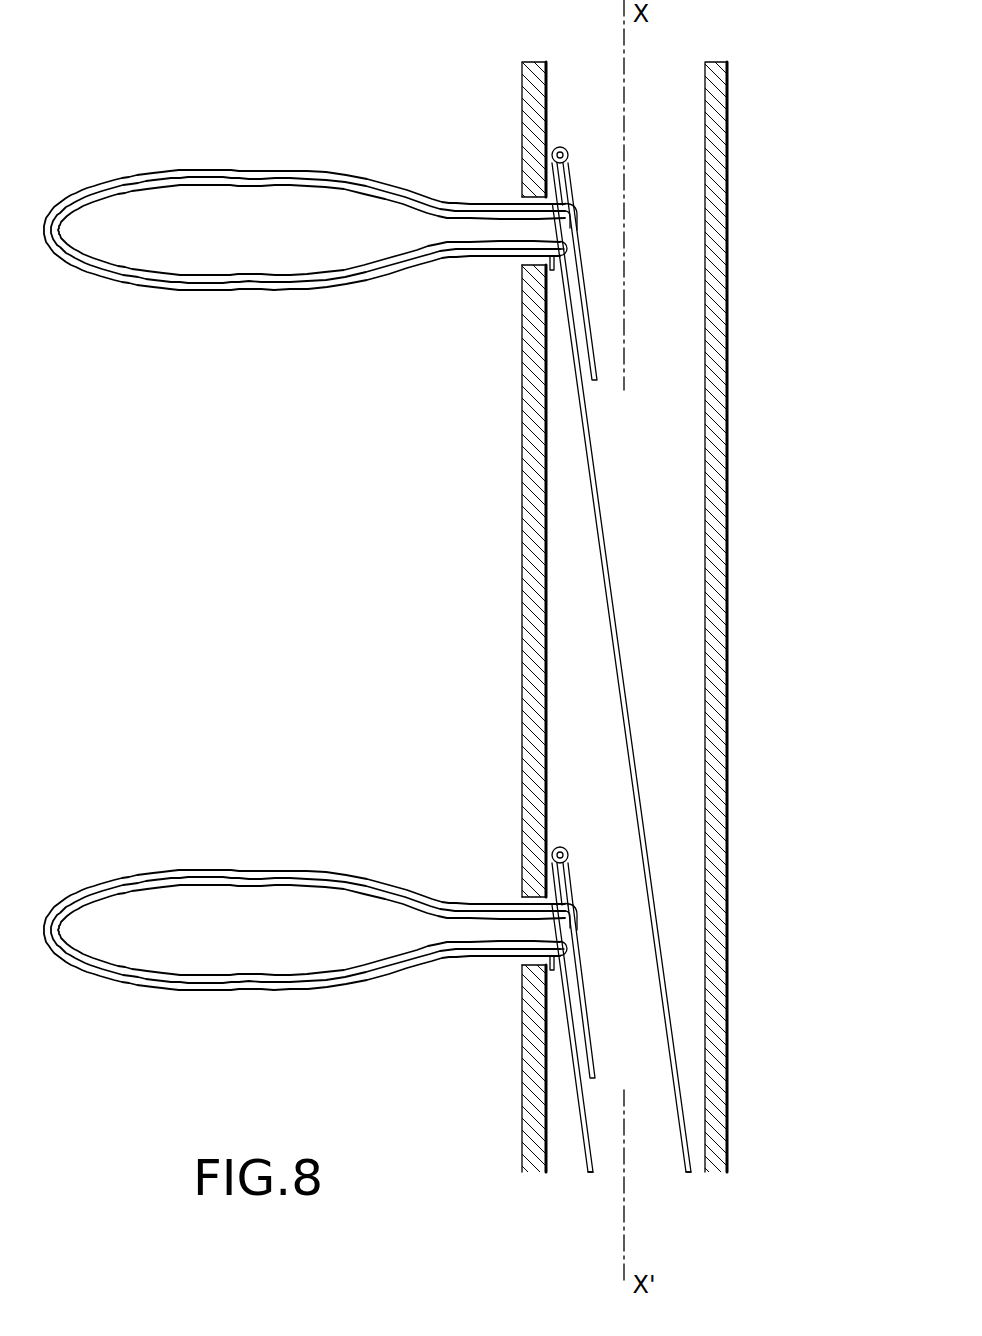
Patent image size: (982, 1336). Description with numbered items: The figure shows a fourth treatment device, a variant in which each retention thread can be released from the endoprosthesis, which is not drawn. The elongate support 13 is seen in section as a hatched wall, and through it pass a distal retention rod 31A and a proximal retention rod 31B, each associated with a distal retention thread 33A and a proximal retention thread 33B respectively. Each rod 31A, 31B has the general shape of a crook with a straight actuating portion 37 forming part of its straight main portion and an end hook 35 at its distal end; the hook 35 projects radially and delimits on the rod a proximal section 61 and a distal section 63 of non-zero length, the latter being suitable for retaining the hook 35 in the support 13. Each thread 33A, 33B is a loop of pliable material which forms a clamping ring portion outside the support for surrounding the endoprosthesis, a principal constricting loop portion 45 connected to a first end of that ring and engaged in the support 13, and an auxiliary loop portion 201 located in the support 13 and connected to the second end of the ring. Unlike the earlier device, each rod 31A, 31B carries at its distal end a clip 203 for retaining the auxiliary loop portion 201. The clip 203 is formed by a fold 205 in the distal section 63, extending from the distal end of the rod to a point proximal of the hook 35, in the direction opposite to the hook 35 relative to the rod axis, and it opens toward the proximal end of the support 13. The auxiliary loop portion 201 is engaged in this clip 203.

The support 13 is at (521, 1160).
The distal retention rod 31A is at (625, 565).
The proximal retention rod 31B is at (601, 1105).
The distal retention thread 33A is at (148, 288).
The proximal retention thread 33B is at (148, 988).
The end hook 35 is at (568, 252).
The straight actuating portion 37 is at (638, 770).
The principal constricting loop portion 45 is at (546, 270).
The proximal section 61 is at (625, 680).
The distal section 63 is at (548, 892).
The auxiliary loop portion 201 is at (582, 221).
The clip 203 is at (582, 196).
The fold 205 is at (585, 340).